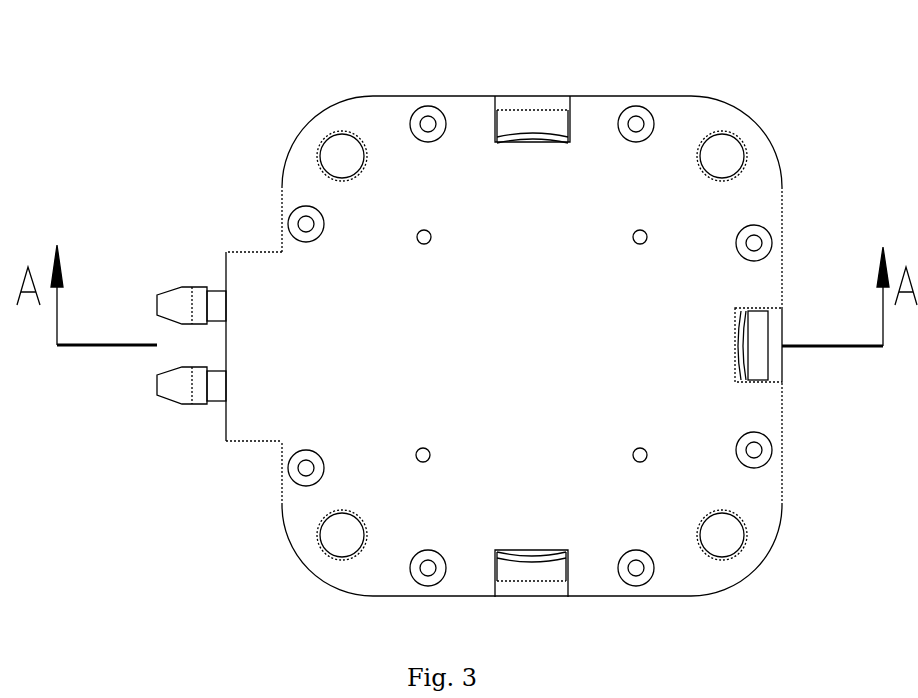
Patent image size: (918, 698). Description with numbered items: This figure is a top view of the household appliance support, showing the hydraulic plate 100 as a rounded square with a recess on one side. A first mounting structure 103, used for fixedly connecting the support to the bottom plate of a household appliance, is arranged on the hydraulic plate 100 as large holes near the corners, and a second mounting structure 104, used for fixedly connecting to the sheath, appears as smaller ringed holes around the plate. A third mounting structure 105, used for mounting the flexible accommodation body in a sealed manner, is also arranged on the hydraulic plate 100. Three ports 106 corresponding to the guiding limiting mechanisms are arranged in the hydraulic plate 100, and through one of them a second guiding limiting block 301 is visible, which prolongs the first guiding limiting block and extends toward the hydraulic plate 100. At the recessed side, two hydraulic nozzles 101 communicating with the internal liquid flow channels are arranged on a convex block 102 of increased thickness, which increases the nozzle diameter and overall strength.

The hydraulic plate 100 is at (457, 190).
The hydraulic nozzles 101 is at (177, 307).
The convex block 102 is at (226, 441).
The first mounting structure 103 is at (722, 156).
The second mounting structure 104 is at (636, 124).
The third mounting structure 105 is at (641, 237).
The port 106 is at (540, 589).
The second guiding limiting block 301 is at (522, 572).